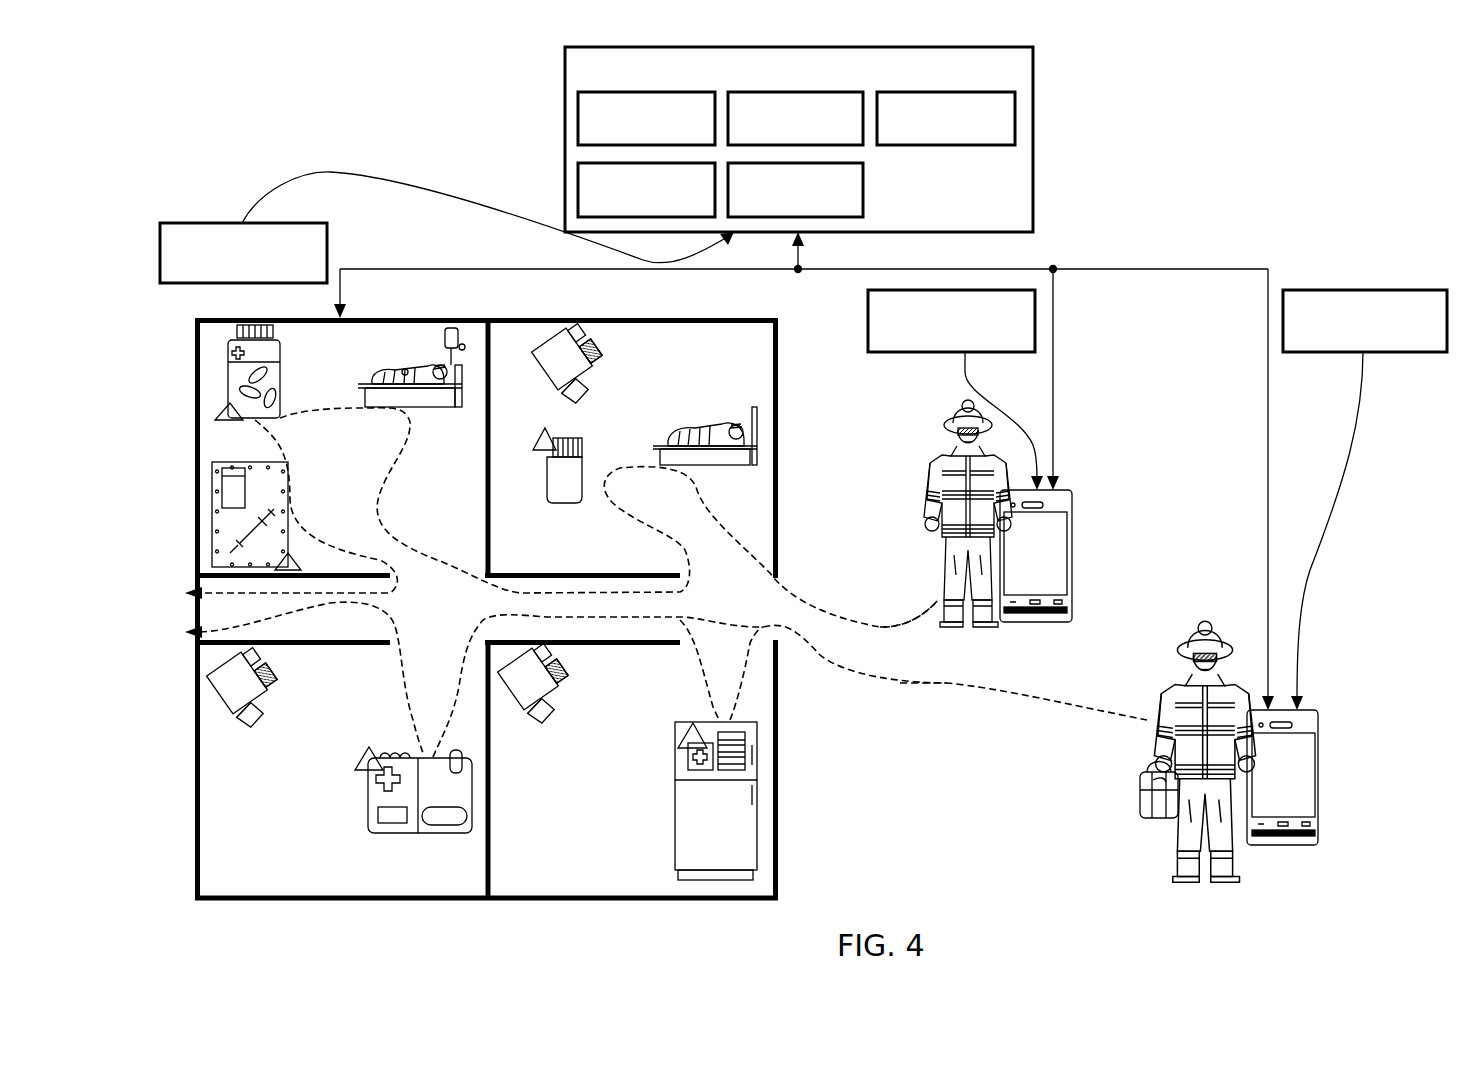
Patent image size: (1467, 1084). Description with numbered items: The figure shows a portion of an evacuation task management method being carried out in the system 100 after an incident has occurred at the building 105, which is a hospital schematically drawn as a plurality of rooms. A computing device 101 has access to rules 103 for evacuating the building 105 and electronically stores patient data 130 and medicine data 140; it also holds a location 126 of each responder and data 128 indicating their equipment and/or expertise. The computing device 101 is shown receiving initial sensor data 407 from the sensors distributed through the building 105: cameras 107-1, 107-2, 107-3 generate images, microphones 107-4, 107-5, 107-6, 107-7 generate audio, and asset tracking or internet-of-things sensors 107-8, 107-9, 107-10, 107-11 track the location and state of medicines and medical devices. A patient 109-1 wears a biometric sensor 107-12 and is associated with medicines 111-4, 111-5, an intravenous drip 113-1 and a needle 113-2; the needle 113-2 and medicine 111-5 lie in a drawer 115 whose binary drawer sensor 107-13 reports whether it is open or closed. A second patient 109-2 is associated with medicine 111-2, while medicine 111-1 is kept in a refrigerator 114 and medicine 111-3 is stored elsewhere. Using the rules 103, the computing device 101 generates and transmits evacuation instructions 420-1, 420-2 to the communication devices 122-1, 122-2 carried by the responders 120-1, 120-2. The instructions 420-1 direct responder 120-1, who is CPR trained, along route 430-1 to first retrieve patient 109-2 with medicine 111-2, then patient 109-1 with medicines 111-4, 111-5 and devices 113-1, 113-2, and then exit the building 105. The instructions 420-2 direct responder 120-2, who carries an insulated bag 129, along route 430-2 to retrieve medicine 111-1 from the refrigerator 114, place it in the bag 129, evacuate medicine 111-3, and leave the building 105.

The system 100 is at (196, 111).
The computing device 101 is at (565, 78).
The rules 103 is at (578, 118).
The location 126 is at (863, 140).
The data 128 is at (1015, 115).
The patient data 130 is at (578, 190).
The medicine data 140 is at (863, 205).
The initial sensor data 407 is at (160, 253).
The building 105 is at (195, 320).
The medicine 111-4 is at (228, 352).
The sensor 107-10 is at (215, 418).
The drawer 115 is at (212, 472).
The medicine 111-5 is at (222, 498).
The medical device 113-2 is at (232, 540).
The sensor 107-13 is at (272, 568).
The patient 109-1 is at (410, 368).
The medical device 113-1 is at (450, 328).
The sensor 107-12 is at (397, 370).
The sensor 107-3 is at (553, 330).
The sensor 107-6 is at (593, 352).
The sensor 107-11 is at (463, 348).
The sensor 107-9 is at (533, 449).
The medicine 111-2 is at (560, 503).
The patient 109-2 is at (722, 450).
The sensor 107-2 is at (210, 680).
The sensor 107-4 is at (270, 682).
The sensor 107-8 is at (356, 768).
The medicine 111-3 is at (368, 812).
The sensor 107-1 is at (532, 705).
The sensor 107-5 is at (560, 672).
The sensor 107-7 is at (680, 748).
The medicine 111-1 is at (710, 770).
The refrigerator 114 is at (675, 857).
The evacuation instructions 420-1 is at (868, 312).
The evacuation instructions 420-2 is at (1423, 352).
The responder 120-1 is at (928, 466).
The responder 120-2 is at (1162, 690).
The communication device 122-1 is at (1072, 552).
The communication device 122-2 is at (1320, 778).
The route 430-1 is at (938, 620).
The route 430-2 is at (938, 687).
The insulated bag 129 is at (1140, 792).